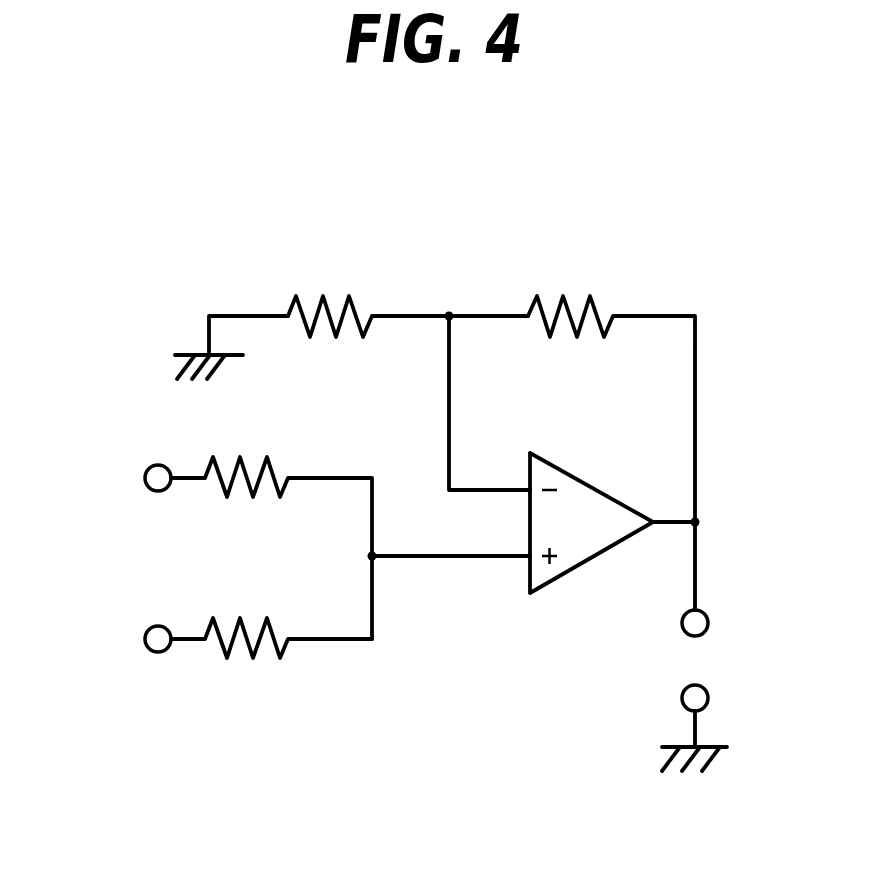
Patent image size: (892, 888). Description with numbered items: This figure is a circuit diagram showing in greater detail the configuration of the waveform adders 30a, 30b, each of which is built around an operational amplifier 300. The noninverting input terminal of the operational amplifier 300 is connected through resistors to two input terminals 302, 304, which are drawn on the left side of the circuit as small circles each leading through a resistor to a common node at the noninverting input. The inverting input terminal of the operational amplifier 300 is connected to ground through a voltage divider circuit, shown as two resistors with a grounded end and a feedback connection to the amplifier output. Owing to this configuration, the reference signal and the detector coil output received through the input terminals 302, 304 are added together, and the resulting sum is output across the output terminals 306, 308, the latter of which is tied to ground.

The waveform adder 30a is at (423, 455).
The waveform adder 30b is at (510, 257).
The operational amplifier 300 is at (567, 471).
The input terminal 302 is at (144, 478).
The input terminal 304 is at (144, 639).
The output terminal 306 is at (709, 620).
The output terminal 308 is at (709, 695).